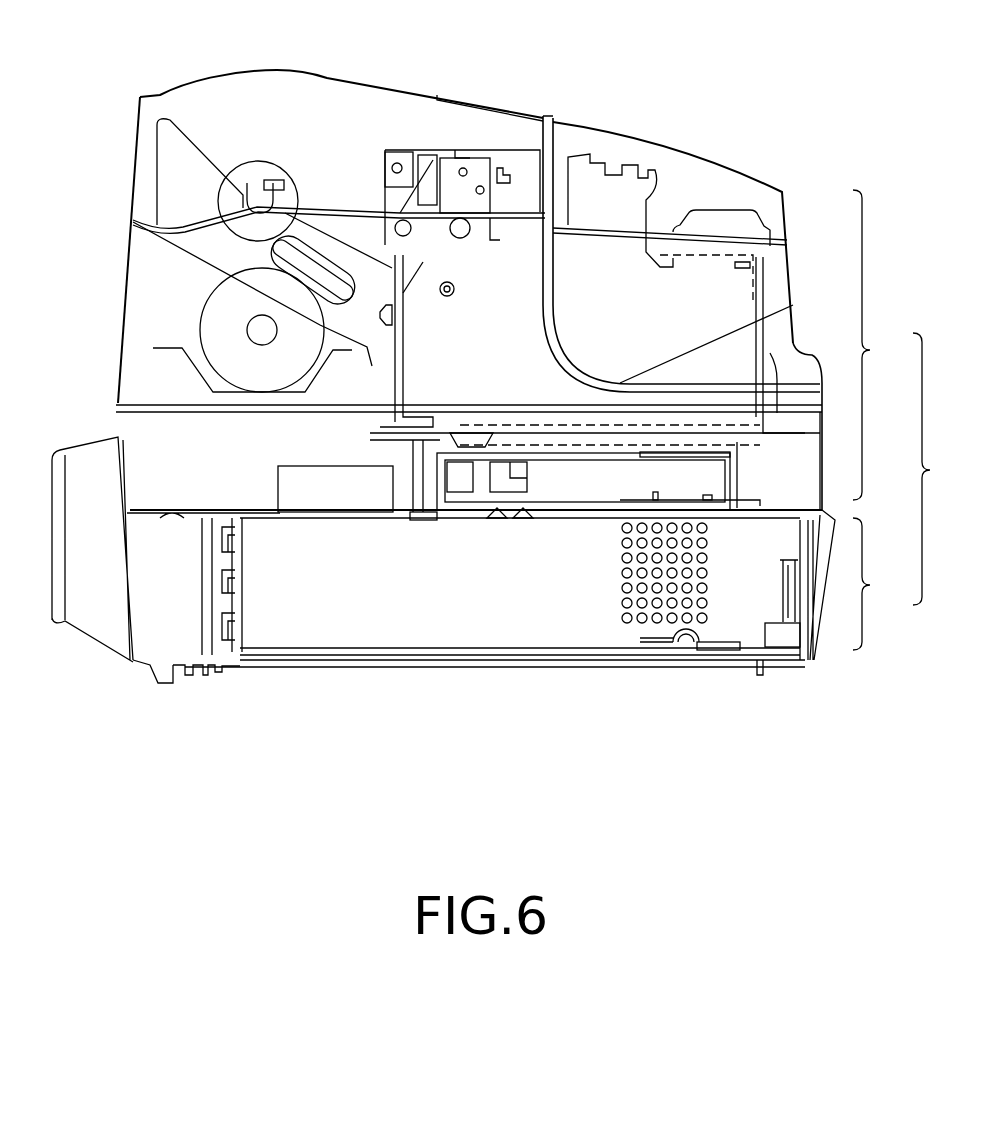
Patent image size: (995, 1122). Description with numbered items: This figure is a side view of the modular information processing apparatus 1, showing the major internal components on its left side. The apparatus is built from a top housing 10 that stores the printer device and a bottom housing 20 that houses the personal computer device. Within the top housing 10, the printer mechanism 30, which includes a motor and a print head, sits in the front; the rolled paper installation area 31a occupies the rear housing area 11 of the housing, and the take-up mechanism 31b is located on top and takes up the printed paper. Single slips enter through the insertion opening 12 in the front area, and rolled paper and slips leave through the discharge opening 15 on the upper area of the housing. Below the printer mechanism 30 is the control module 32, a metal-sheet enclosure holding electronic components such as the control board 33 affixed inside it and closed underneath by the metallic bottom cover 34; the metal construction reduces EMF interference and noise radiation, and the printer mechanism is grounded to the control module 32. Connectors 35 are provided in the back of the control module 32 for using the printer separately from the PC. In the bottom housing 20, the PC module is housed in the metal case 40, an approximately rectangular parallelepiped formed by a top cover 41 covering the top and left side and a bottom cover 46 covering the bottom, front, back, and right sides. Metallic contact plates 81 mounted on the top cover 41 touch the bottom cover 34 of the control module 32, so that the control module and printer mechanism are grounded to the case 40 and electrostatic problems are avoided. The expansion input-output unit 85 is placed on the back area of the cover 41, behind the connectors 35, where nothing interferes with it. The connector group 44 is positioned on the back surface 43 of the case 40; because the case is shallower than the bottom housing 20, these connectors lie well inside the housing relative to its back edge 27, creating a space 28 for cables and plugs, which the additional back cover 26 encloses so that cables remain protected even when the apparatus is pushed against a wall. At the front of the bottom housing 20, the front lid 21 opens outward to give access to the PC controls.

The information processing apparatus 1 is at (935, 469).
The top housing 10 is at (881, 345).
The rear housing area 11 is at (326, 72).
The insertion opening 12 is at (770, 358).
The discharge opening 15 is at (551, 116).
The bottom housing 20 is at (882, 584).
The front lid 21 is at (823, 566).
The back cover 26 is at (102, 623).
The back edge 27 is at (137, 667).
The space 28 is at (185, 638).
The printer mechanism 30 is at (640, 200).
The rolled paper installation area 31a is at (306, 358).
The take-up mechanism 31b is at (287, 187).
The control module 32 is at (733, 476).
The control board 33 is at (653, 455).
The bottom cover 34 is at (553, 508).
The connectors 35 is at (457, 470).
The case 40 is at (563, 635).
The top cover 41 is at (562, 520).
The back surface 43 is at (243, 553).
The connector group 44 is at (233, 626).
The bottom cover 46 is at (400, 660).
The contact plates 81 is at (490, 520).
The expansion input-output unit 85 is at (293, 471).